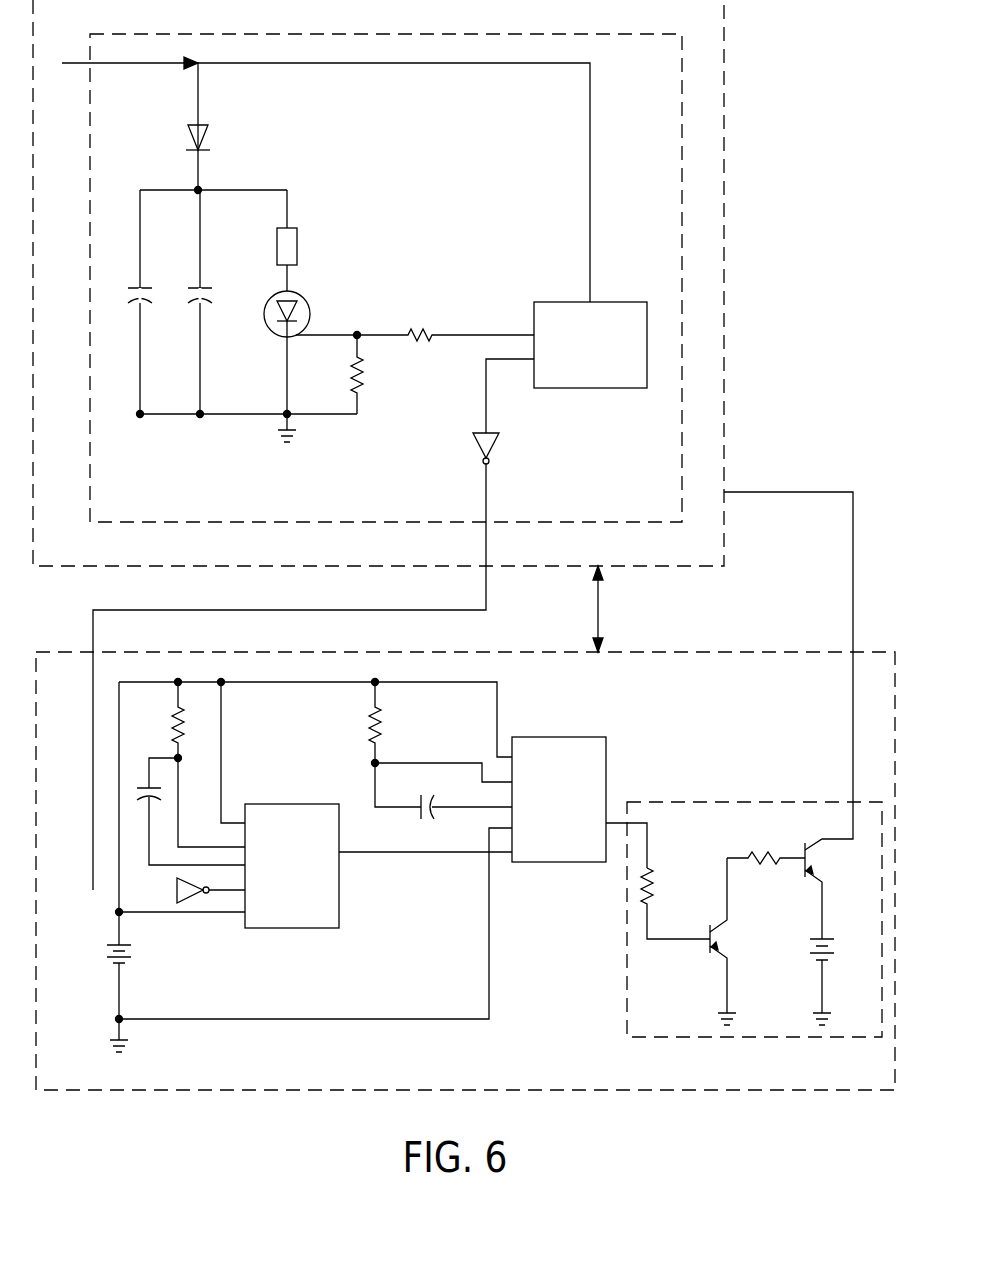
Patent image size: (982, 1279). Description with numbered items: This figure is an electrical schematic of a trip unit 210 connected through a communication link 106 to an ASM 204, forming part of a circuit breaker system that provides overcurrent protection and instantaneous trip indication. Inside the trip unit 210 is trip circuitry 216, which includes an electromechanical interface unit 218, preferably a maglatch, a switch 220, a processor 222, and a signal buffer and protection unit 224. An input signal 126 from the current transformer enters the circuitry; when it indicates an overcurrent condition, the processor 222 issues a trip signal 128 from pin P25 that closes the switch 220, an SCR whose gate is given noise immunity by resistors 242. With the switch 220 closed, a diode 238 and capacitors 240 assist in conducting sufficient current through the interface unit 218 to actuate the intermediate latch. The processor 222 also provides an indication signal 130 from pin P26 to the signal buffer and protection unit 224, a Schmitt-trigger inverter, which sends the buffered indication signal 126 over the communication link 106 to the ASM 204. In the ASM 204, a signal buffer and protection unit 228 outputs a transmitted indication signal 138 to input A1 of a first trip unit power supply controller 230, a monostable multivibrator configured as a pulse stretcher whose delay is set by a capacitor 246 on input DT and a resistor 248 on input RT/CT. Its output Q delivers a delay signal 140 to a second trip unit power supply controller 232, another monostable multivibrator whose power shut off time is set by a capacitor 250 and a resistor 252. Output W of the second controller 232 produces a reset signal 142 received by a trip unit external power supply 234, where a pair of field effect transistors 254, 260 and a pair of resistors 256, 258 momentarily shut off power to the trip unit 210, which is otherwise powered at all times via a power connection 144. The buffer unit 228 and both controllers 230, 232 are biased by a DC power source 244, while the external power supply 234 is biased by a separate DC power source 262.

The communication link 106 is at (492, 587).
The input signal / buffered indication signal 126 is at (150, 64).
The trip signal 128 is at (465, 330).
The indication signal 130 is at (482, 390).
The transmitted indication signal 138 is at (227, 893).
The delay signal 140 is at (370, 855).
The reset signal 142 is at (616, 815).
The power connection 144 is at (810, 492).
The ASM 204 is at (690, 658).
The trip unit 210 is at (724, 107).
The trip circuitry 216 is at (430, 35).
The electromechanical interface unit 218 is at (297, 243).
The switch 220 is at (305, 298).
The processor 222 is at (628, 300).
The signal buffer and protection unit 224 is at (497, 450).
The signal buffer and protection unit 228 is at (187, 905).
The first trip unit power supply controller 230 is at (297, 930).
The second trip unit power supply controller 232 is at (578, 733).
The trip unit external power supply 234 is at (626, 990).
The diode 238 is at (213, 134).
The capacitors 240 is at (195, 288).
The resistors 242 is at (367, 380).
The DC power source 244 is at (135, 955).
The capacitor 246 is at (130, 797).
The resistor 248 is at (172, 718).
The capacitor 250 is at (432, 823).
The resistor 252 is at (362, 720).
The field effect transistor 254 is at (735, 940).
The resistor 256 is at (660, 880).
The resistor 258 is at (760, 848).
The field effect transistor 260 is at (818, 860).
The DC power source 262 is at (835, 945).